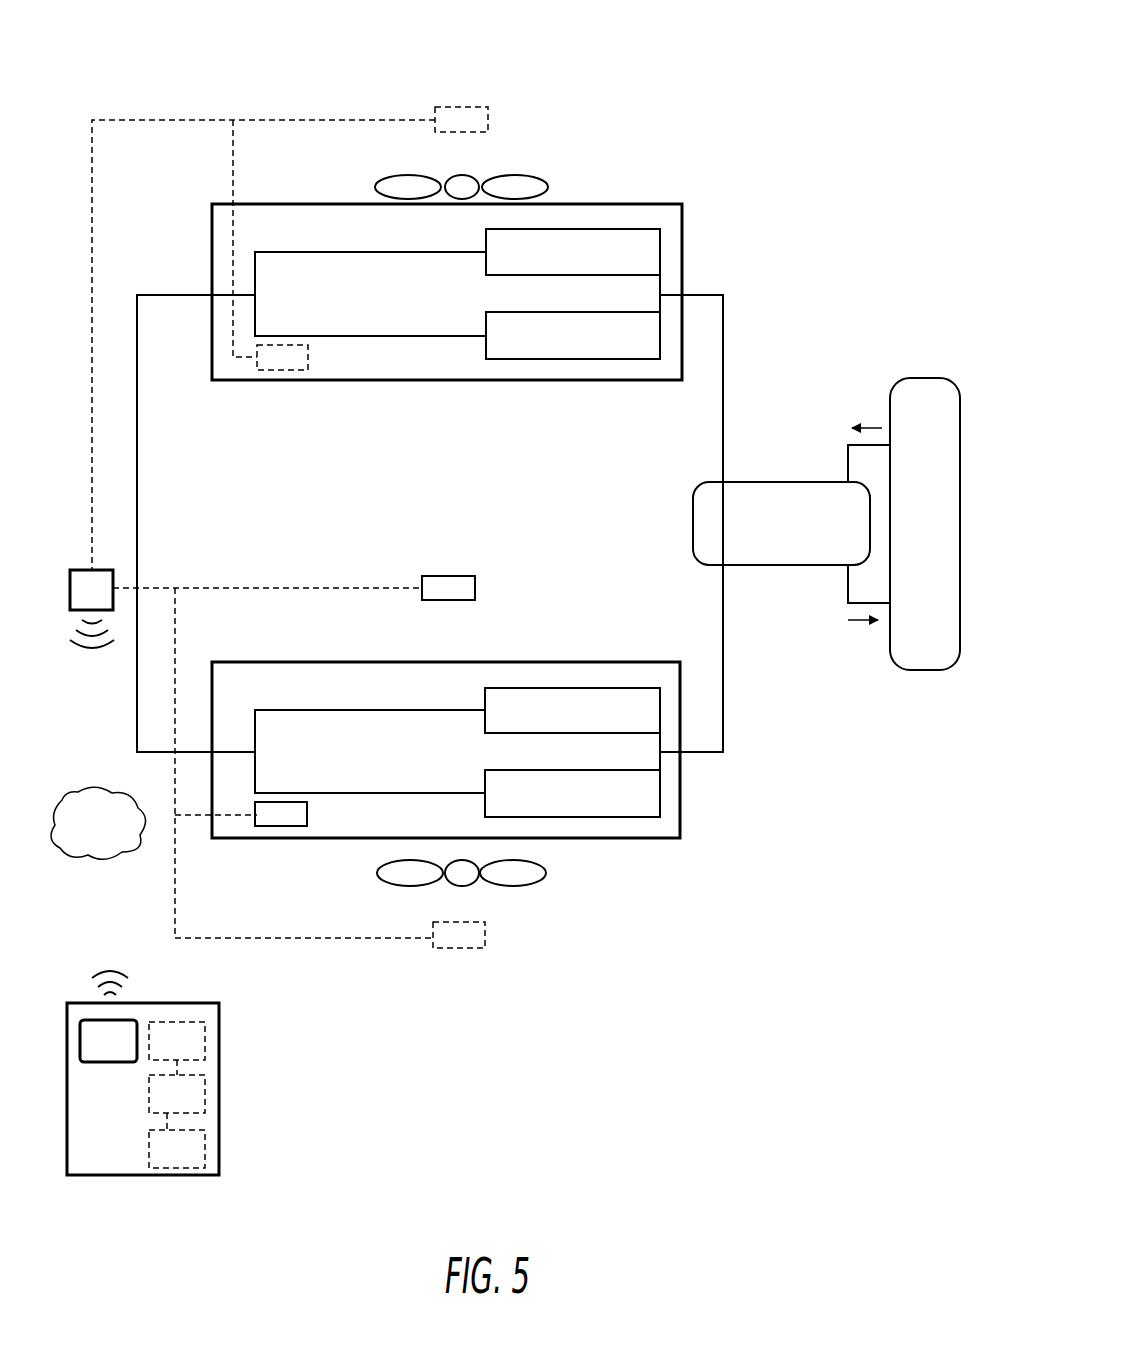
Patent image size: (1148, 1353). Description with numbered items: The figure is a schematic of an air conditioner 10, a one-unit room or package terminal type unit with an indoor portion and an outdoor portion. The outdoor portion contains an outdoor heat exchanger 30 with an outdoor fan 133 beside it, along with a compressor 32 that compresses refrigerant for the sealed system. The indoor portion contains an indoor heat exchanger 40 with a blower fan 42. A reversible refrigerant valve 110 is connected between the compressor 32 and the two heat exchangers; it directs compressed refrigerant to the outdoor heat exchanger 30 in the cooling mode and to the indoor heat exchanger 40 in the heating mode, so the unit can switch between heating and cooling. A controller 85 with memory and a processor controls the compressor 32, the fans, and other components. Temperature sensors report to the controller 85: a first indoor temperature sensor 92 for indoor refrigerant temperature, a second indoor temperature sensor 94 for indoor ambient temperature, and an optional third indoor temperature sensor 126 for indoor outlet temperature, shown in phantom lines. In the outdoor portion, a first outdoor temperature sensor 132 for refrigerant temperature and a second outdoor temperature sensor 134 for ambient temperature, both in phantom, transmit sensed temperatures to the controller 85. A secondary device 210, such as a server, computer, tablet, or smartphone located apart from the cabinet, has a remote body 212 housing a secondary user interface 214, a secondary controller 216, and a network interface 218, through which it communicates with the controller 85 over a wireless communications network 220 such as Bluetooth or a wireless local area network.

The air conditioner 10 is at (751, 68).
The outdoor heat exchanger 30 is at (458, 382).
The compressor 32 is at (907, 378).
The indoor heat exchanger 40 is at (297, 662).
The blower fan 42 is at (535, 878).
The controller 85 is at (104, 570).
The first indoor temperature sensor 92 is at (283, 828).
The second indoor temperature sensor 94 is at (463, 576).
The reversible refrigerant valve 110 is at (740, 482).
The third indoor temperature sensor 126 is at (485, 938).
The first outdoor temperature sensor 132 is at (286, 383).
The outdoor fan 133 is at (532, 177).
The second outdoor temperature sensor 134 is at (490, 120).
The secondary device 210 is at (158, 1198).
The remote body 212 is at (67, 1152).
The secondary user interface 214 is at (205, 1147).
The secondary controller 216 is at (205, 1093).
The network interface 218 is at (205, 1042).
The wireless communications network 220 is at (117, 839).